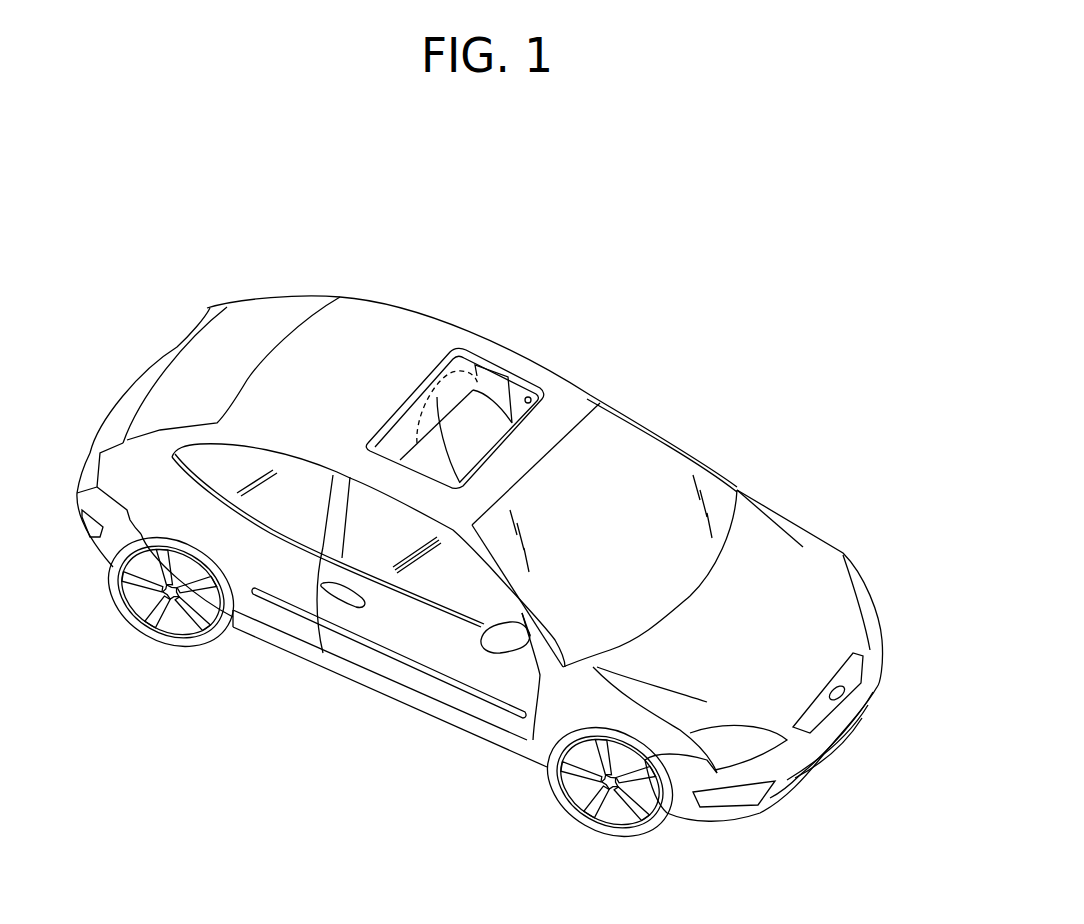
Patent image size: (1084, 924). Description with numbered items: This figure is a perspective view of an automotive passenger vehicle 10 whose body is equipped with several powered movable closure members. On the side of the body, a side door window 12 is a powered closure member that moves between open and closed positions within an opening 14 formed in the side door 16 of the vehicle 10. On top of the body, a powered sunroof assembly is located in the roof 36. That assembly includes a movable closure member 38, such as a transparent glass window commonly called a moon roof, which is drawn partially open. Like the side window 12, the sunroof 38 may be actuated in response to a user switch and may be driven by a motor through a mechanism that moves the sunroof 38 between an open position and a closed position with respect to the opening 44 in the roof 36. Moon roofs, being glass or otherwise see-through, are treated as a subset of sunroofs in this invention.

The automotive passenger vehicle 10 is at (843, 472).
The side door window 12 is at (383, 555).
The opening 14 is at (343, 532).
The side door 16 is at (407, 677).
The roof 36 is at (358, 381).
The movable closure member (sunroof) 38 is at (474, 368).
The opening 44 is at (520, 378).